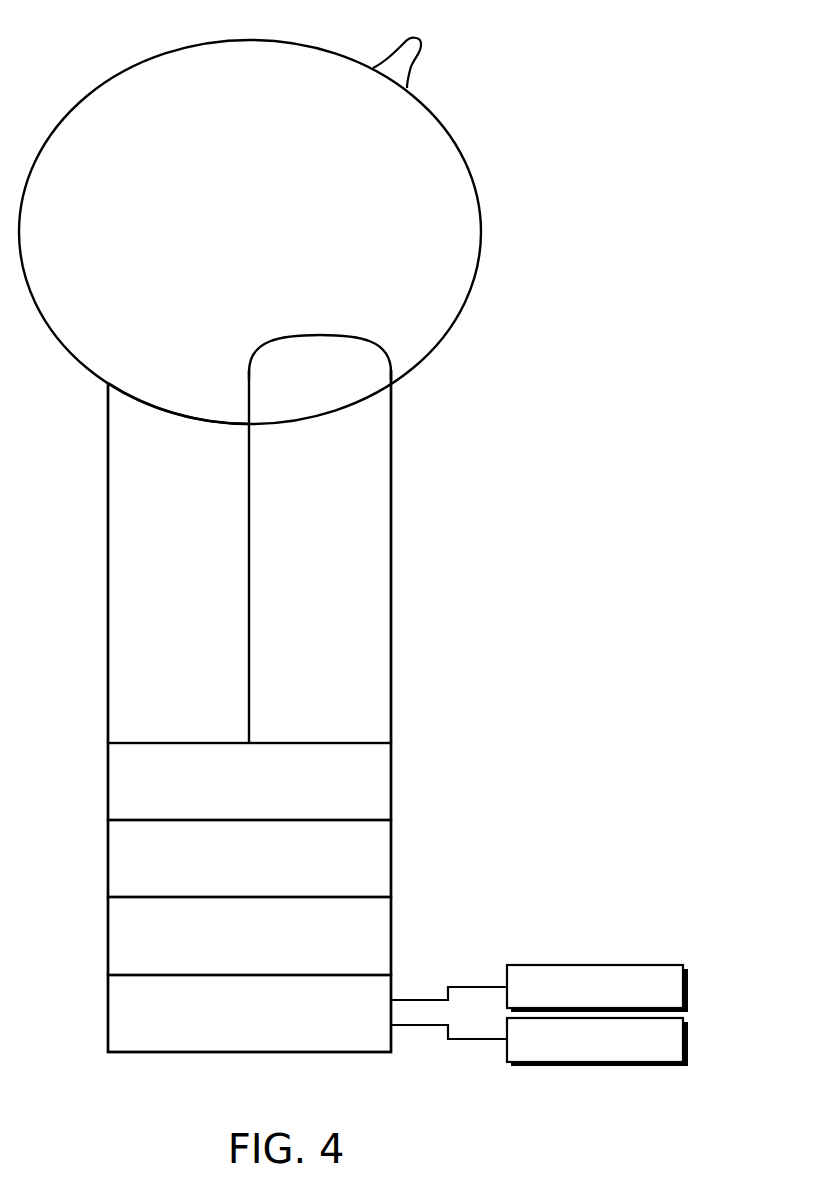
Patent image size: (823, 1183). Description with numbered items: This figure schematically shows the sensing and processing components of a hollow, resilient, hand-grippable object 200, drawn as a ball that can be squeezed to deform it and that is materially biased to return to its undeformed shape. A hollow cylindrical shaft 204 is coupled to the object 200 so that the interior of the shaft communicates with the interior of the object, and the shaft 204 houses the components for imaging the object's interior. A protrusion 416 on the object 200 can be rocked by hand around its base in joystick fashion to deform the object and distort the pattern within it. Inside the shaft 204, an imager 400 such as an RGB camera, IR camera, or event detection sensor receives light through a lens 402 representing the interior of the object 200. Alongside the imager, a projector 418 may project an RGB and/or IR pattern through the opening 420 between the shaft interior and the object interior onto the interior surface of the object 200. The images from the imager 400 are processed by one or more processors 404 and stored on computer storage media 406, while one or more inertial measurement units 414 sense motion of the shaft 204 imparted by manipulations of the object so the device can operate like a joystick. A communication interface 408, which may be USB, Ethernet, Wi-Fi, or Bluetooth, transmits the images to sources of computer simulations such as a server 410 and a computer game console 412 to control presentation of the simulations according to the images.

The hand-grippable object 200 is at (482, 230).
The protrusion 416 is at (407, 48).
The lens 402 is at (318, 335).
The opening 420 is at (203, 418).
The shaft 204 is at (413, 649).
The projector 418 is at (108, 560).
The imager 400 is at (392, 565).
The inertial measurement unit 414 is at (108, 781).
The processor 404 is at (108, 856).
The computer storage media 406 is at (108, 935).
The communication interface 408 is at (108, 1011).
The server 410 is at (593, 965).
The computer game console 412 is at (685, 1040).